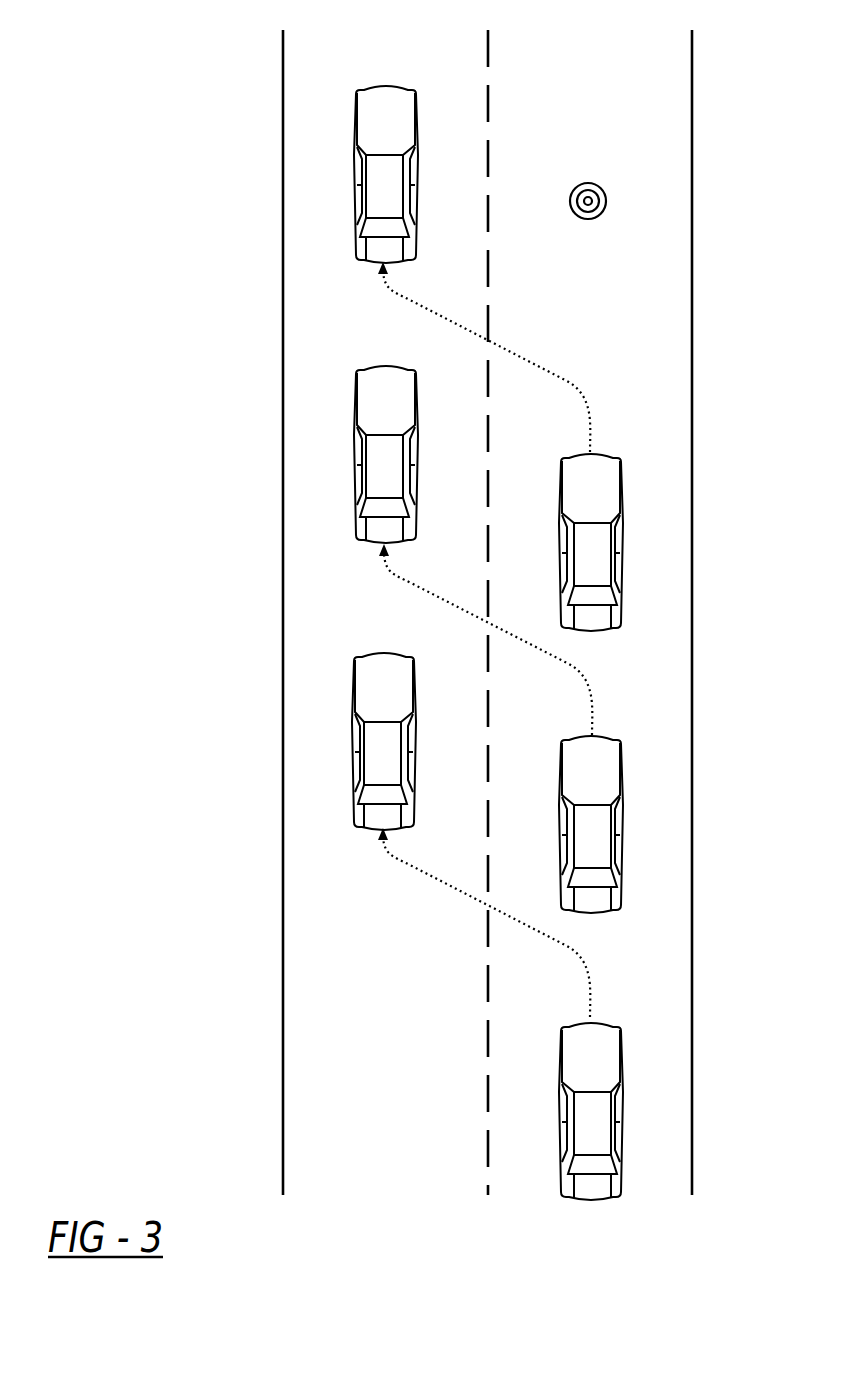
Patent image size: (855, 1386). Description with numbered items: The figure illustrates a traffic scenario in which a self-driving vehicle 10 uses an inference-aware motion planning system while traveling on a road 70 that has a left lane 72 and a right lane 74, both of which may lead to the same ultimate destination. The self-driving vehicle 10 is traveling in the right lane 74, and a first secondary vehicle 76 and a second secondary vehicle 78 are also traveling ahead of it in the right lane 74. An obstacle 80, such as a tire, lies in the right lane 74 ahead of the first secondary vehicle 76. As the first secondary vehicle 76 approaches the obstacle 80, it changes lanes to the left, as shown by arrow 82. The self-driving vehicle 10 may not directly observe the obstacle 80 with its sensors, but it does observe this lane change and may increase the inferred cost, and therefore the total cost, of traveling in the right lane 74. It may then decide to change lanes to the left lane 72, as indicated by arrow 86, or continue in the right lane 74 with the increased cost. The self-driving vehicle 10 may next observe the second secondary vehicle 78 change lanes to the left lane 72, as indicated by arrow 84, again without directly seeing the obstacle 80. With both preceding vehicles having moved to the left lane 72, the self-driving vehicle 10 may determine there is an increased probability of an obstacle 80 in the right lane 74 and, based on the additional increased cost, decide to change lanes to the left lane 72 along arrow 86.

The self-driving vehicle 10 is at (368, 655).
The road 70 is at (693, 935).
The left lane 72 is at (331, 44).
The right lane 74 is at (644, 44).
The first secondary vehicle 76 is at (368, 88).
The second secondary vehicle 78 is at (370, 368).
The obstacle 80 is at (595, 184).
The arrow 82 is at (569, 388).
The arrow 84 is at (584, 685).
The arrow 86 is at (580, 962).